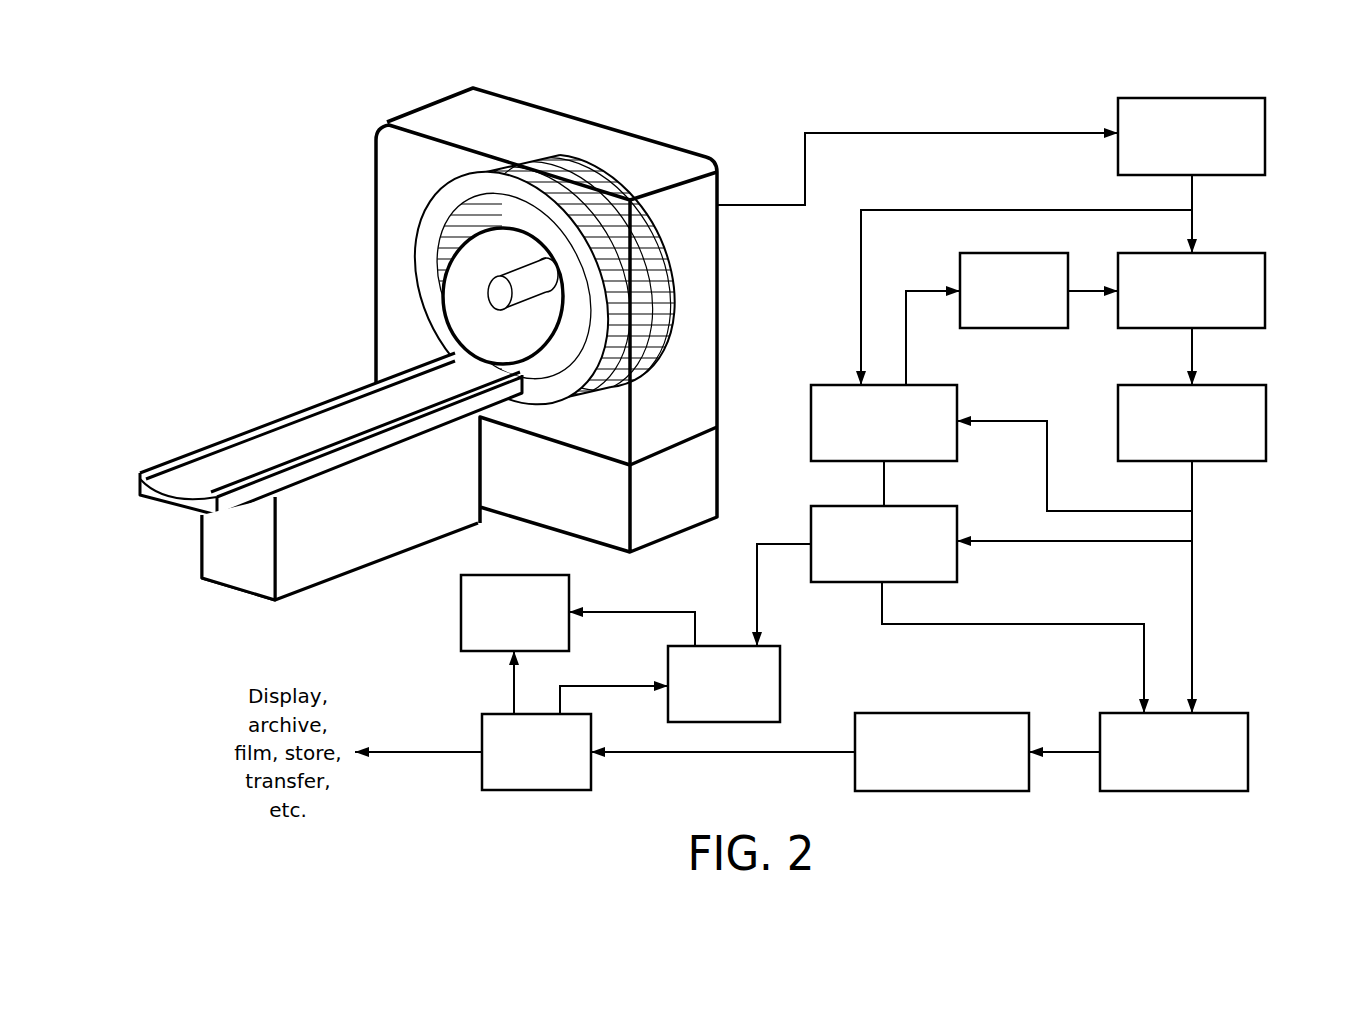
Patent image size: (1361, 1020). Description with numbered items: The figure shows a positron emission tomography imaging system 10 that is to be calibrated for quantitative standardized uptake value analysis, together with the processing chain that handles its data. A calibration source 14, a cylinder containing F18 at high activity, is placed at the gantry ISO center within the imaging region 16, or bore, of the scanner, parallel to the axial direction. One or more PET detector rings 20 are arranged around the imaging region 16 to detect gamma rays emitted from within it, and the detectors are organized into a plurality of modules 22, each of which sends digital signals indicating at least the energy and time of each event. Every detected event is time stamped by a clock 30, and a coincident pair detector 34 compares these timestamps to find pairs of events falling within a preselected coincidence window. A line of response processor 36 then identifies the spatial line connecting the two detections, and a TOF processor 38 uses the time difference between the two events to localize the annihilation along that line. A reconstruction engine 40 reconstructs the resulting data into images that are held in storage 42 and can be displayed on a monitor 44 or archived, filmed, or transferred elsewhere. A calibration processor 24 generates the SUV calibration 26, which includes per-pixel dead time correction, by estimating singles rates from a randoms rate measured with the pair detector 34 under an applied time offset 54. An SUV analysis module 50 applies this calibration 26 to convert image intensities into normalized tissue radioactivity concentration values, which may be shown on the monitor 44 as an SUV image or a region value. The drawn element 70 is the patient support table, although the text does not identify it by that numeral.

The positron emission tomography (PET) imaging system 10 is at (318, 143).
The calibration source 14 is at (462, 326).
The imaging region 16 is at (478, 265).
The PET detector ring 20 is at (684, 333).
The module 22 is at (658, 248).
The calibration processor 24 is at (810, 427).
The SUV calibration 26 is at (810, 530).
The clock 30 is at (1267, 133).
The coincident pair detector 34 is at (1267, 290).
The line of response (LOR) processor 36 is at (1267, 421).
The TOF processor 38 is at (1250, 752).
The reconstruction engine 40 is at (944, 713).
The storage 42 is at (482, 733).
The monitor 44 is at (460, 612).
The SUV analysis module 50 is at (782, 685).
The time offset 54 is at (1013, 329).
The patient support table 70 is at (268, 440).